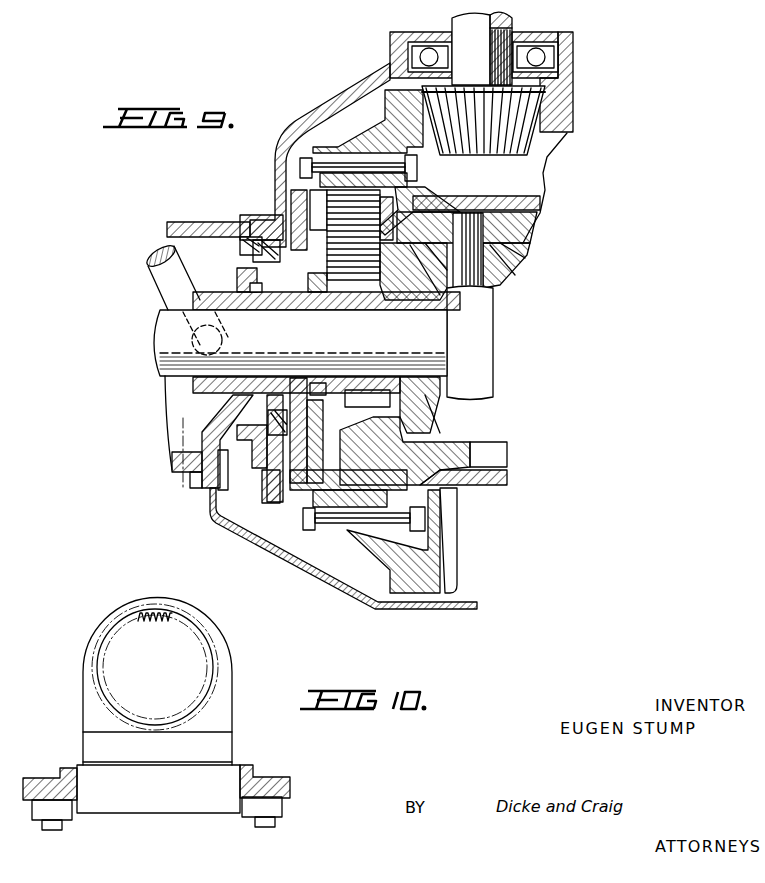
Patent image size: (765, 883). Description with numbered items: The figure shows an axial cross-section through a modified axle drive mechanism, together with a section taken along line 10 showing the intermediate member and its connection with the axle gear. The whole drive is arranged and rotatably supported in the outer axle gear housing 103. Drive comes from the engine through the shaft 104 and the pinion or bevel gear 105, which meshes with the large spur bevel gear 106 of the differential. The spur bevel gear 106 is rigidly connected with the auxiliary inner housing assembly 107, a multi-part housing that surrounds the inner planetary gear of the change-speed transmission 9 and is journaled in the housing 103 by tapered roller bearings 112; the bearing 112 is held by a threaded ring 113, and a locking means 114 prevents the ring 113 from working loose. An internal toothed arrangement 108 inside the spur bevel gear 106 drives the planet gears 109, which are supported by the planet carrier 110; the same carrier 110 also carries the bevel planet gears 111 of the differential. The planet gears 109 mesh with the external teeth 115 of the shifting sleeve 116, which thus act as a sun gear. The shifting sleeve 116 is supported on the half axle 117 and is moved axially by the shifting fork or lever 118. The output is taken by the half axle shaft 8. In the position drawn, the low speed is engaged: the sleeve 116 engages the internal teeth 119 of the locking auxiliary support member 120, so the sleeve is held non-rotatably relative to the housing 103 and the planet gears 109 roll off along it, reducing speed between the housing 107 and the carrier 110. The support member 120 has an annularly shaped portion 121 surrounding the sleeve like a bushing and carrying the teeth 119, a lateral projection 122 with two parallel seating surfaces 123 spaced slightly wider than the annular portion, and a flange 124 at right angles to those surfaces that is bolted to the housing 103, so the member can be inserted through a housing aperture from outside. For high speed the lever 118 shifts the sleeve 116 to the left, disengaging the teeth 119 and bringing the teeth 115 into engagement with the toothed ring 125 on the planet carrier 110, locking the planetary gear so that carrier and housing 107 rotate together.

In FIG. 9, the output shaft 8 is at (507, 345).
In FIG. 9, the change-speed transmission 9 is at (330, 212).
In FIG. 9, the section line 10— 10 is at (223, 500).
In FIG. 9, the outer axle gear housing 103 is at (318, 118).
In FIG. 10, the outer axle gear housing 103 is at (50, 768).
In FIG. 9, the shaft 104 is at (507, 22).
In FIG. 9, the pinion or bevel gear 105 is at (545, 110).
In FIG. 9, the spur bevel gear 106 is at (395, 108).
In FIG. 9, the auxiliary inner housing assembly 107 is at (507, 200).
In FIG. 9, the internal toothed arrangement 108 is at (350, 530).
In FIG. 9, the planet gears 109 is at (330, 235).
In FIG. 9, the planet carrier 110 is at (535, 215).
In FIG. 9, the bevel planet gears 111 is at (515, 258).
In FIG. 9, the tapered roller bearings 112 is at (270, 233).
In FIG. 9, the threaded ring 113 is at (247, 240).
In FIG. 9, the locking means 114 is at (262, 497).
In FIG. 9, the external teeth 115 is at (365, 413).
In FIG. 9, the shifting sleeve 116 is at (355, 310).
In FIG. 9, the half axle 117 is at (437, 336).
In FIG. 9, the shifting fork or lever 118 is at (158, 282).
In FIG. 9, the internal teeth 119 is at (253, 292).
In FIG. 10, the internal teeth 119 is at (166, 623).
In FIG. 9, the locking auxiliary support member 120 is at (218, 407).
In FIG. 10, the locking auxiliary support member 120 is at (144, 590).
In FIG. 9, the annularly shaped portion 121 is at (237, 277).
In FIG. 10, the annularly shaped portion 121 is at (233, 655).
In FIG. 9, the lateral projection 122 is at (205, 443).
In FIG. 10, the lateral projection 122 is at (207, 770).
In FIG. 9, the seating surfaces 123 is at (185, 460).
In FIG. 10, the seating surfaces 123 is at (78, 790).
In FIG. 9, the flange 124 is at (193, 488).
In FIG. 10, the flange 124 is at (78, 813).
In FIG. 9, the toothed ring 125 is at (318, 385).